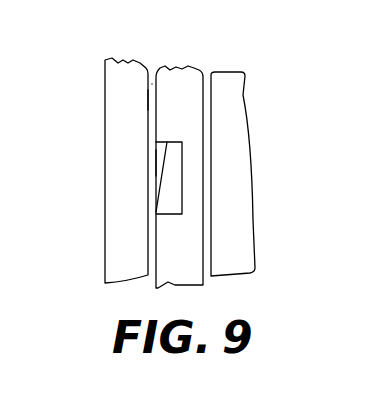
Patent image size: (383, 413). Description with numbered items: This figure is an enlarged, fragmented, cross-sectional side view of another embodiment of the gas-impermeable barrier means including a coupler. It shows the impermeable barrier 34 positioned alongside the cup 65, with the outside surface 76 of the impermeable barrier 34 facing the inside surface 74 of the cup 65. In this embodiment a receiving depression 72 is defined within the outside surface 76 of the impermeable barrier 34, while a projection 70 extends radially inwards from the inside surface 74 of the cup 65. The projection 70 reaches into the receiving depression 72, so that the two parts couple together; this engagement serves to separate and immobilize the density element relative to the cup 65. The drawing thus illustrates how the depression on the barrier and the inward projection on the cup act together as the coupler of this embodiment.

The impermeable barrier 34 is at (190, 77).
The cup 65 is at (112, 236).
The projection 70 is at (156, 163).
The receiving depression 72 is at (163, 194).
The inside surface 74 is at (152, 97).
The outside surface 76 is at (156, 82).